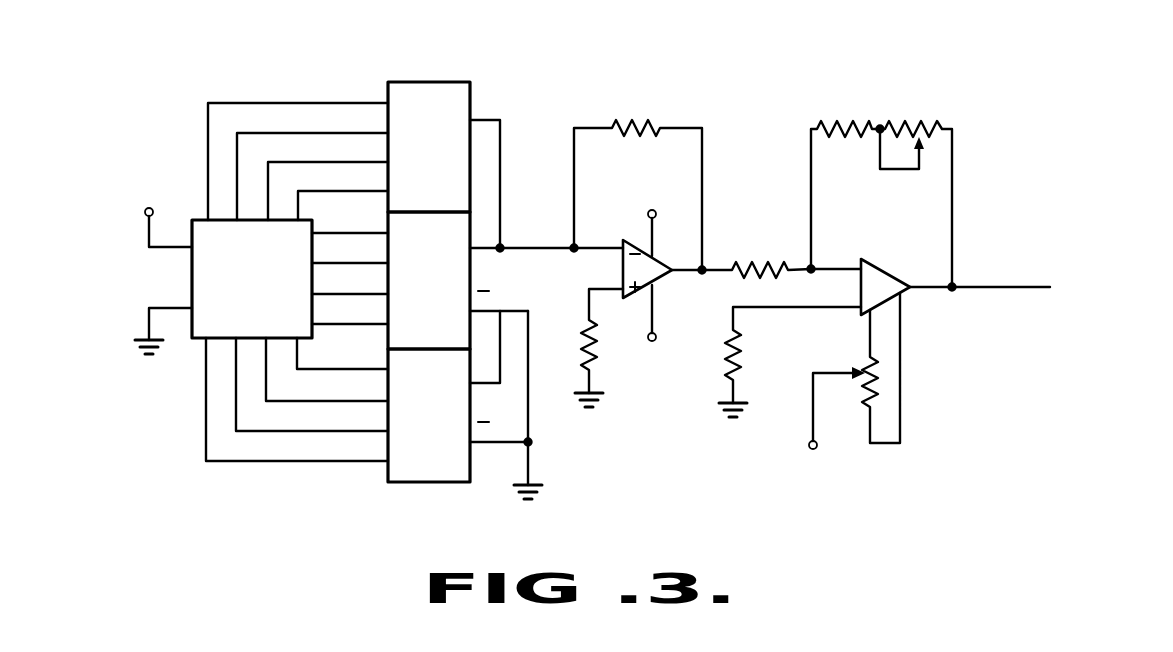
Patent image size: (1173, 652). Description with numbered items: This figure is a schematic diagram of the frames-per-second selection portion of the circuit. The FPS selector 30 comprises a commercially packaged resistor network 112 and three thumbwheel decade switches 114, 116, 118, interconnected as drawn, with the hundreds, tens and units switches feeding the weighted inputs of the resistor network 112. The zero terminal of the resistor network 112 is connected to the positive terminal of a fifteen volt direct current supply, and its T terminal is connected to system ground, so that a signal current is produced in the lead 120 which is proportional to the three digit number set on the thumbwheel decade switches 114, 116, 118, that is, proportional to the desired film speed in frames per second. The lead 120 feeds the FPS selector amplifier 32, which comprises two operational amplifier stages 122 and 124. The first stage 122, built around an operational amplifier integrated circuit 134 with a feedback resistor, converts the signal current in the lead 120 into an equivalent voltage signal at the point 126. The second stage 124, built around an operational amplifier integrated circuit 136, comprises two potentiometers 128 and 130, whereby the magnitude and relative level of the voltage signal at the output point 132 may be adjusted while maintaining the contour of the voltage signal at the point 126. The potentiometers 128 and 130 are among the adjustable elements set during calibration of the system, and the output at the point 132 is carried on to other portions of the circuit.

The FPS selector 30 is at (283, 84).
The FPS selector amplifier 32 is at (779, 112).
The resistor network 112 is at (195, 340).
The thumbwheel decade switch 114 is at (430, 482).
The thumbwheel decade switch 116 is at (463, 226).
The thumbwheel decade switch 118 is at (458, 82).
The lead 120 is at (525, 252).
The operational amplifier stage 122 is at (724, 142).
The operational amplifier stage 124 is at (996, 146).
The point 126 is at (704, 274).
The potentiometer 128 is at (862, 154).
The potentiometer 130 is at (842, 357).
The point 132 is at (952, 291).
The operational amplifier integrated circuit 134 is at (623, 243).
The operational amplifier integrated circuit 136 is at (877, 280).